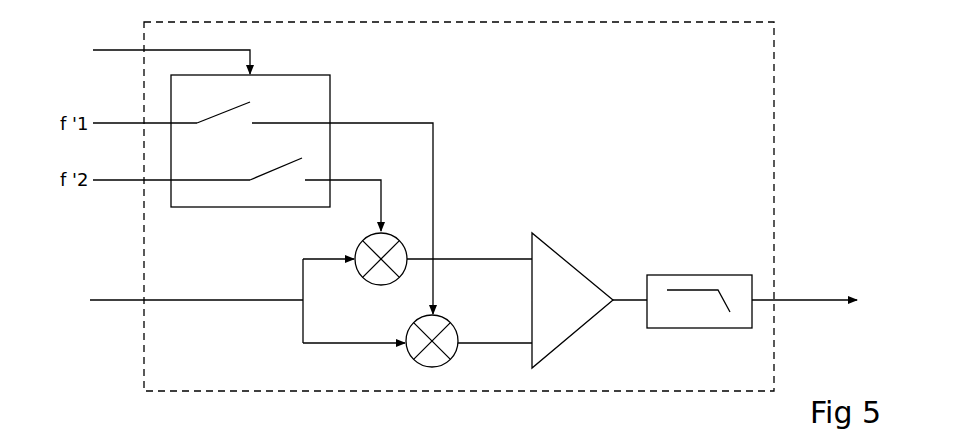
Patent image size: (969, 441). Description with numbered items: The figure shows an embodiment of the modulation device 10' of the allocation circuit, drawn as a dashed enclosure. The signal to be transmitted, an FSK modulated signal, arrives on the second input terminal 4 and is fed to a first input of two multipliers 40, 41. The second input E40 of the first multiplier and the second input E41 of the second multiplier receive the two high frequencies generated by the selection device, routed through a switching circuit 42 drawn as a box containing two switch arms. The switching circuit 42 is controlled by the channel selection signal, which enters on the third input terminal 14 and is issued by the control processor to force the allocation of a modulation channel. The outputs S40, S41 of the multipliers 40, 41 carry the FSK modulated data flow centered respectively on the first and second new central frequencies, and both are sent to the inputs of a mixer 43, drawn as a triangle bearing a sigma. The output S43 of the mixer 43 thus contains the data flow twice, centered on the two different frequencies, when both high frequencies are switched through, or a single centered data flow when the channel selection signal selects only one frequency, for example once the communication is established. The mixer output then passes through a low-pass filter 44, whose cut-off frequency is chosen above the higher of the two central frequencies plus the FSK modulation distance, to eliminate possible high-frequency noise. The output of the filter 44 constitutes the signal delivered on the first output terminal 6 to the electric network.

The modulation device 10' is at (496, 206).
The third input terminal 14 is at (118, 52).
The switching circuit 42 is at (330, 100).
The second input terminal 4 is at (112, 300).
The multiplier 40 is at (360, 280).
The multiplier 41 is at (407, 358).
The mixer 43 is at (553, 252).
The low-pass filter 44 is at (700, 275).
The first output terminal 6 is at (810, 298).
The second input of multiplier 40 E40 is at (379, 204).
The second input of multiplier 41 E41 is at (433, 163).
The output of multiplier 40 S40 is at (450, 262).
The output of multiplier 41 S41 is at (498, 345).
The output of mixer 43 S43 is at (620, 298).